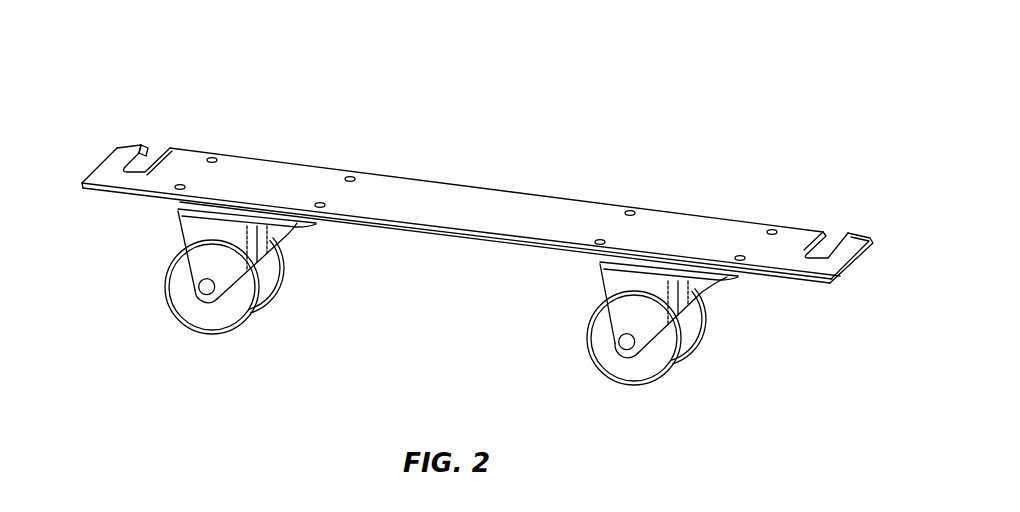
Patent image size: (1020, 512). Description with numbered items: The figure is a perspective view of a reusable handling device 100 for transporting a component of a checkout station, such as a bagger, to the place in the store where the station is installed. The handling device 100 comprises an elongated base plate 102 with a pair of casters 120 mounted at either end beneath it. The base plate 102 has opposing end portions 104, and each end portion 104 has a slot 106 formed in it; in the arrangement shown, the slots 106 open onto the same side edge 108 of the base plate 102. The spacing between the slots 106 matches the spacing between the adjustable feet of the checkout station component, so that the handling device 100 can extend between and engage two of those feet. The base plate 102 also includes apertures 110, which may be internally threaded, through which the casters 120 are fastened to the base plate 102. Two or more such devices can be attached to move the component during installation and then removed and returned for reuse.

The handling device 100 is at (548, 134).
The base plate 102 is at (548, 208).
The end portion 104 is at (105, 98).
The slot 106 is at (148, 153).
The side edge 108 is at (275, 148).
The aperture 110 is at (353, 175).
The caster 120 is at (292, 317).